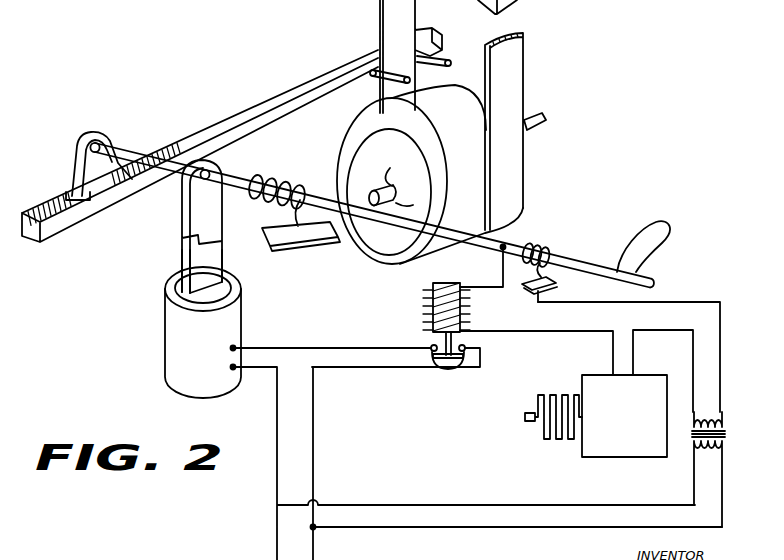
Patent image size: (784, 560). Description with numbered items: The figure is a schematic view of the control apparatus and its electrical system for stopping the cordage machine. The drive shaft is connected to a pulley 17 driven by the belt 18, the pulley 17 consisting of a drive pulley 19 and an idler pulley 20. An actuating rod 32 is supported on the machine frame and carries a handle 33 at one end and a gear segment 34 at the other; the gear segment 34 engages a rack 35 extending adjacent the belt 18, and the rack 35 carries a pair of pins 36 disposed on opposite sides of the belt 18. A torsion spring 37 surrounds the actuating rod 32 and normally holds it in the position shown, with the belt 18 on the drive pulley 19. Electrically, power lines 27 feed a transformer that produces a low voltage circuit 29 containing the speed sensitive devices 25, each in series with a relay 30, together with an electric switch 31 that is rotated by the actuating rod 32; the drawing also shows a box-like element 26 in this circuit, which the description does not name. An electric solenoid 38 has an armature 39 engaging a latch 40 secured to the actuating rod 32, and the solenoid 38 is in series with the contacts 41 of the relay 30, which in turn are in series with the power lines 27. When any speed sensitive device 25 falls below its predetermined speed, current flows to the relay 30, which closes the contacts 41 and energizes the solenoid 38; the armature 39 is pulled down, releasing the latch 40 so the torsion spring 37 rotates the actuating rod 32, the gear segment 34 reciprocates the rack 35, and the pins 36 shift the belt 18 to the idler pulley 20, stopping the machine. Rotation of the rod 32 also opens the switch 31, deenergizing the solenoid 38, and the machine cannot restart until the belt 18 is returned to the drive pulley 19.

The pulley 17 is at (462, 98).
The belt 18 is at (390, 13).
The drive pulley 19 is at (488, 110).
The idler pulley 20 is at (386, 117).
The speed sensitive device 25 is at (566, 462).
The control box 26 is at (630, 425).
The power lines 27 is at (313, 491).
The low voltage circuit 29 is at (699, 302).
The relay 30 is at (432, 309).
The electric switch 31 is at (546, 258).
The actuating rod 32 is at (590, 266).
The handle 33 is at (659, 232).
The gear segment 34 is at (78, 160).
The rack 35 is at (170, 153).
The pins 36 is at (413, 60).
The torsion spring 37 is at (294, 192).
The electric solenoid 38 is at (188, 332).
The armature 39 is at (190, 253).
The latch 40 is at (192, 200).
The contacts 41 is at (450, 366).